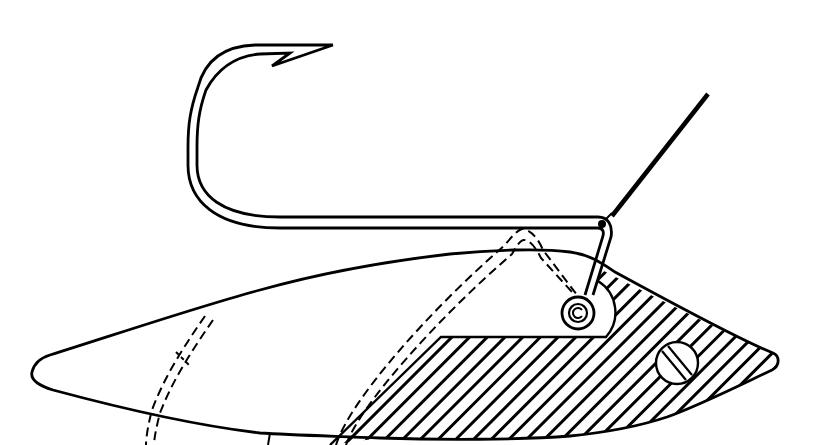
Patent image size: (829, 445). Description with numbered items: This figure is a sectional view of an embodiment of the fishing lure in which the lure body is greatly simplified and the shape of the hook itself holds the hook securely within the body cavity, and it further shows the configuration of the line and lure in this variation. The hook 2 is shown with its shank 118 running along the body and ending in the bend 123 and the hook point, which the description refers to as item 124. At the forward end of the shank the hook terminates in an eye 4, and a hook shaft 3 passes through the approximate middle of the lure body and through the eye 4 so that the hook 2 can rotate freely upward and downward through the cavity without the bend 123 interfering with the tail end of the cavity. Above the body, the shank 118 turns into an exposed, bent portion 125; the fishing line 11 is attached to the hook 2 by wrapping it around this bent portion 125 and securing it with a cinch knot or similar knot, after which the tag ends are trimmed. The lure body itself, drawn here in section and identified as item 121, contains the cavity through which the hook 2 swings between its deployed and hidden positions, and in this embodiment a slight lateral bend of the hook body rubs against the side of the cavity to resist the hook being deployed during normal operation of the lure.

The hook 2 is at (373, 141).
The hook point with barb 124 is at (297, 54).
The bend 123 is at (191, 162).
The shank 118 is at (385, 210).
The fishing line 11 is at (657, 150).
The bent portion 125 is at (610, 229).
The hook shaft 3 is at (625, 283).
The eye 4 is at (562, 313).
The lure body 121 is at (252, 290).